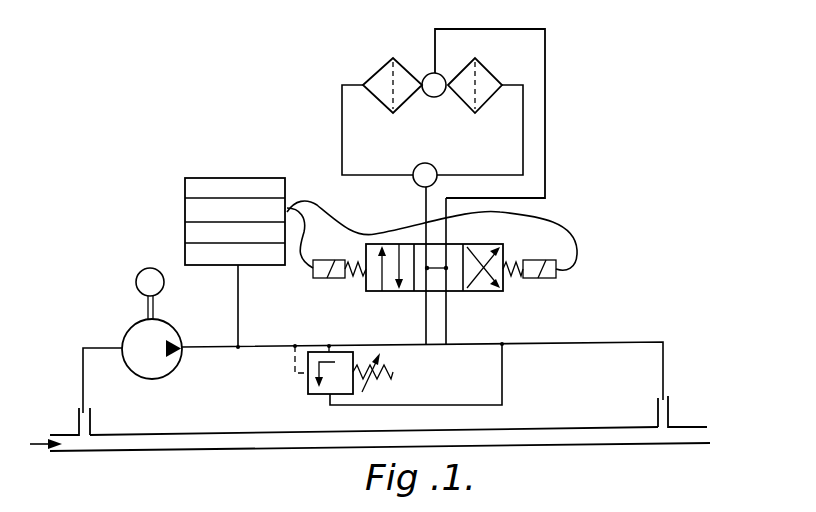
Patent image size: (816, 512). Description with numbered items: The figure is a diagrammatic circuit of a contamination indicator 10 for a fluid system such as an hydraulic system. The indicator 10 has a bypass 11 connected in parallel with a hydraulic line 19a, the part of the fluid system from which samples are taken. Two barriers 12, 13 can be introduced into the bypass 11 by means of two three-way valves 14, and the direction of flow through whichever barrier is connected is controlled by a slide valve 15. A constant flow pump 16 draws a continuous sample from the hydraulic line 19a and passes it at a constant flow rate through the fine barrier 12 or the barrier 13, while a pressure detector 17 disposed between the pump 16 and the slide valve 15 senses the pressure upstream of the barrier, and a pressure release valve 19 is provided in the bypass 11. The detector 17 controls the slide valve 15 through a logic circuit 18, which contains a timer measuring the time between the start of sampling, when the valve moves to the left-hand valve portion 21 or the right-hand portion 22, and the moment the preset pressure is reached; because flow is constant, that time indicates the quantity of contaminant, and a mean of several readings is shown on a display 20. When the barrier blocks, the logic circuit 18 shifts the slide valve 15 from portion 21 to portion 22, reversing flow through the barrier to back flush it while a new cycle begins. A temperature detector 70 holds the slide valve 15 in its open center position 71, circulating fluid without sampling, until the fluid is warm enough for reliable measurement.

The contamination indicator 10 is at (550, 81).
The bypass 11 is at (588, 341).
The fine barrier 12 is at (371, 80).
The barrier 13 is at (498, 80).
The 3-way valves 14 is at (426, 163).
The slide valve 15 is at (434, 269).
The constant flow pump 16 is at (130, 333).
The pressure detector 17 is at (263, 267).
The logic circuit 18 is at (190, 212).
The pressure release valve 19 is at (299, 393).
The hydraulic line 19a is at (606, 441).
The display 20 is at (210, 177).
The left-hand valve portion 21 is at (386, 292).
The right-hand portion 22 is at (466, 293).
The temperature detector 70 is at (204, 267).
The open center position 71 is at (428, 292).